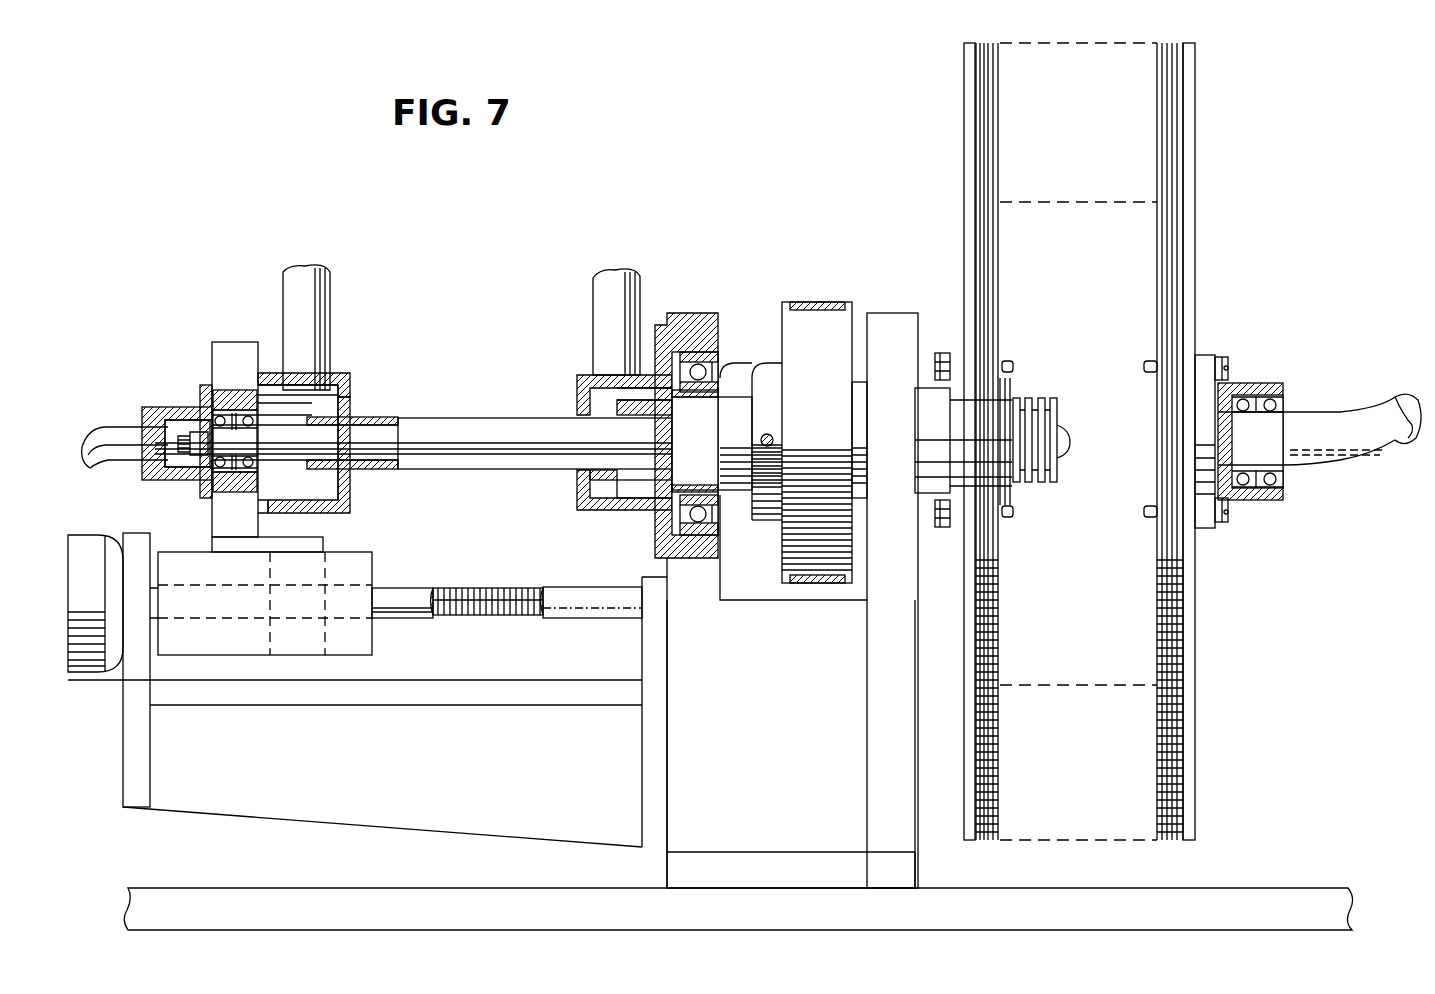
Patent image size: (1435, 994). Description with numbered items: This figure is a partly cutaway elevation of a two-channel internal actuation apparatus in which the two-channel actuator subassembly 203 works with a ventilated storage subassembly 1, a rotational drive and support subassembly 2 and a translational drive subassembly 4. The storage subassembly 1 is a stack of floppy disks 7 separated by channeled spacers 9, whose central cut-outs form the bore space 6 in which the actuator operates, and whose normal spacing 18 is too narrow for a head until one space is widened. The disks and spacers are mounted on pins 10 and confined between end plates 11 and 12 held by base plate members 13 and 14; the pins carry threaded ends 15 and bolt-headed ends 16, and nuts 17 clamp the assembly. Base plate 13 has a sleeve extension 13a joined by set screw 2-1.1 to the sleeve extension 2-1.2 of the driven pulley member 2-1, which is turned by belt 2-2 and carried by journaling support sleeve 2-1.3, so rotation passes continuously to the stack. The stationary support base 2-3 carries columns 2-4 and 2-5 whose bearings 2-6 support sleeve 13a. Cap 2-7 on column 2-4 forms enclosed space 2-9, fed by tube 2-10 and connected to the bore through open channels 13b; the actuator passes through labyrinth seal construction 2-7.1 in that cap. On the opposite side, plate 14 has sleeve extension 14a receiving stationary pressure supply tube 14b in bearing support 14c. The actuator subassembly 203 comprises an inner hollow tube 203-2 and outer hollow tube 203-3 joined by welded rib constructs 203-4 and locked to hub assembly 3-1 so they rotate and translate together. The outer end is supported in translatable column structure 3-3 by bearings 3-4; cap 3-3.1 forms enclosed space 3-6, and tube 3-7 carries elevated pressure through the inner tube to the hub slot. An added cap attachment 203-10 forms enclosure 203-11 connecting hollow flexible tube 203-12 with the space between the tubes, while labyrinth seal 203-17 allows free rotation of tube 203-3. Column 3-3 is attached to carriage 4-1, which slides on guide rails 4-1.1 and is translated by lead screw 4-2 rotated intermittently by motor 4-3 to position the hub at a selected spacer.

The ventilated storage subassembly 1 is at (1104, 431).
The rotational drive and support subassembly 2 is at (761, 541).
The driven pulley member 2-1 is at (788, 317).
The set screw 2-1.1 is at (772, 438).
The sleeve extension 2-1.2 is at (764, 520).
The journaling support sleeve 2-1.3 is at (860, 413).
The belt 2-2 is at (822, 302).
The support base 2-3 is at (805, 713).
The support column 2-4 is at (685, 313).
The support column 2-5 is at (885, 313).
The bearings 2-6 is at (705, 365).
The cap 2-7 is at (603, 510).
The labyrinth seal construction 2-7.1 is at (572, 480).
The enclosed space 2-9 is at (656, 495).
The tube 2-10 is at (598, 290).
The hub assembly 3-1 is at (1068, 386).
The translatable column structure 3-3 is at (228, 342).
The cap 3-3.1 is at (152, 407).
The bearings 3-4 is at (222, 470).
The enclosed space 3-6 is at (178, 470).
The tube 3-7 is at (100, 468).
The translational drive subassembly 4 is at (355, 620).
The carriage 4-1 is at (372, 568).
The guide rails 4-1.1 is at (403, 614).
The lead screw 4-2 is at (482, 615).
The motor 4-3 is at (100, 672).
The bore space 6 is at (1113, 448).
The disks 7 is at (998, 80).
The channeled spacers 9 is at (996, 390).
The pins 10 is at (1143, 362).
The end plate 11 is at (964, 146).
The end plate 12 is at (1195, 135).
The base plate member 13 is at (948, 353).
The sleeve extension 13a is at (722, 395).
The open channels 13b is at (695, 433).
The base plate member 14 is at (1200, 355).
The sleeve extension 14a is at (1274, 383).
The pressure supply tube 14b is at (1372, 462).
The bearing support 14c is at (1283, 398).
The threaded ends 15 is at (1228, 366).
The bolt-headed ends 16 is at (937, 372).
The nuts 17 is at (1221, 357).
The normal spacing 18 is at (996, 48).
The two-channel actuator subassembly 203 is at (493, 362).
The inner hollow tube 203-2 is at (395, 425).
The outer hollow tube 203-3 is at (500, 425).
The welded rib constructs 203-4 is at (350, 415).
The cap attachment 203-10 is at (338, 375).
The enclosure 203-11 is at (326, 497).
The hollow flexible tube 203-12 is at (330, 285).
The labyrinth seal 203-17 is at (356, 476).